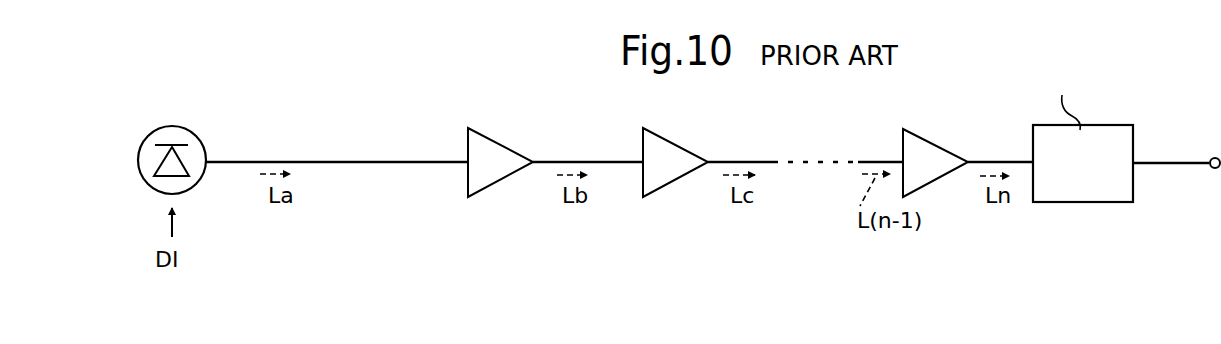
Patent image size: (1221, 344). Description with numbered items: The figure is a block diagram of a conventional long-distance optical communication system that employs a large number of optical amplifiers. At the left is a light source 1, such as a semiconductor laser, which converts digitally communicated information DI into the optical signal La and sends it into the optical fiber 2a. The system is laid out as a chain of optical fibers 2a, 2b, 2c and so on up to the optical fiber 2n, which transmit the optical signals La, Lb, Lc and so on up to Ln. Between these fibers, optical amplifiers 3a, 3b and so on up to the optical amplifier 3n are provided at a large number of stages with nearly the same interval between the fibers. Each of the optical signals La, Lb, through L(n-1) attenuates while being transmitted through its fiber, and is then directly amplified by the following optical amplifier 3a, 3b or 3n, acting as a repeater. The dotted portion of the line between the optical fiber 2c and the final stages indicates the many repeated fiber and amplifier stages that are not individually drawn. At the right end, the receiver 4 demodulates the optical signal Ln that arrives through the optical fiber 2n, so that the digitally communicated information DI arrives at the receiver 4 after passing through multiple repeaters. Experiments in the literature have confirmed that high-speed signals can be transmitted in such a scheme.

The light source 1 is at (178, 127).
The optical fiber 2a is at (327, 160).
The optical fiber 2b is at (572, 162).
The optical fiber 2c is at (740, 162).
The optical fiber 2n is at (995, 162).
The optical amplifier 3a is at (492, 176).
The optical amplifier 3b is at (671, 177).
The optical amplifier 3n is at (935, 177).
The receiver 4 is at (1084, 200).